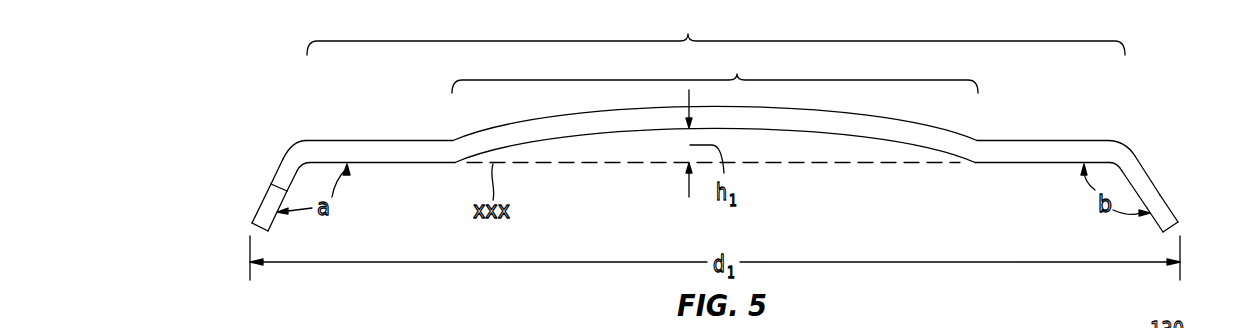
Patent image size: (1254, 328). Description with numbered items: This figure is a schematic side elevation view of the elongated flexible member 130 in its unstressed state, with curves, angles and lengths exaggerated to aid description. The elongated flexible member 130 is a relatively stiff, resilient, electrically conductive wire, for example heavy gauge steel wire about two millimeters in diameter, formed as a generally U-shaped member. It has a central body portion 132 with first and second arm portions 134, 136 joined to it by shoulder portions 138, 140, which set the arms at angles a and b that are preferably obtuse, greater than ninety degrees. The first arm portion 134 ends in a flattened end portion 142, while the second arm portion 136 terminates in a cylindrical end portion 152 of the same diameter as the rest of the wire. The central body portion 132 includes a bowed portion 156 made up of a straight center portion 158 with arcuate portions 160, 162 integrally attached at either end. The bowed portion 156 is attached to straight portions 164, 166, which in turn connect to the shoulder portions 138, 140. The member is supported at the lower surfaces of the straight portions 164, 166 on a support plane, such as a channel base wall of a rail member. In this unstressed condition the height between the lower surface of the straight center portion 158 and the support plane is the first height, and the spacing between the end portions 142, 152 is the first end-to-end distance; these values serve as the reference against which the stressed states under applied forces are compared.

The elongated flexible member 130 is at (1139, 89).
The central body portion 132 is at (716, 31).
The first arm portion 134 is at (271, 188).
The second arm portion 136 is at (1163, 184).
The shoulder portion 138 is at (294, 141).
The shoulder portion 140 is at (1137, 141).
The flattened end portion 142 is at (259, 208).
The cylindrical end portion 152 is at (1171, 205).
The bowed portion 156 is at (715, 93).
The straight center portion 158 is at (772, 132).
The arcuate portion 160 is at (545, 141).
The arcuate portion 162 is at (885, 141).
The straight portion 164 is at (381, 140).
The straight portion 166 is at (1052, 140).